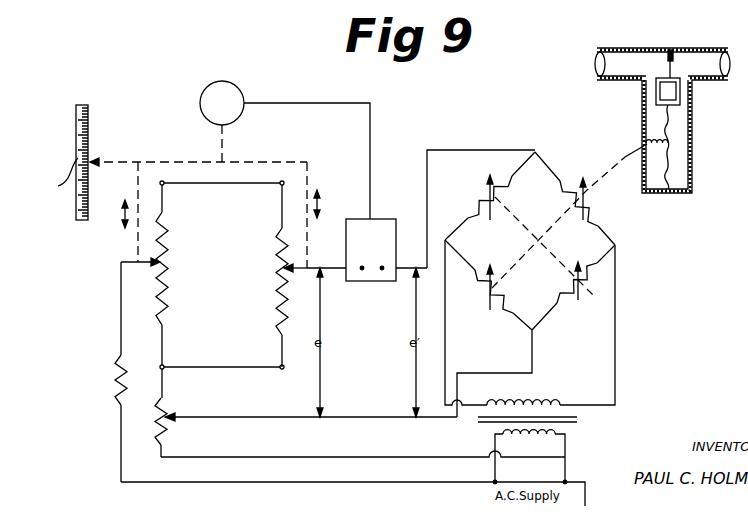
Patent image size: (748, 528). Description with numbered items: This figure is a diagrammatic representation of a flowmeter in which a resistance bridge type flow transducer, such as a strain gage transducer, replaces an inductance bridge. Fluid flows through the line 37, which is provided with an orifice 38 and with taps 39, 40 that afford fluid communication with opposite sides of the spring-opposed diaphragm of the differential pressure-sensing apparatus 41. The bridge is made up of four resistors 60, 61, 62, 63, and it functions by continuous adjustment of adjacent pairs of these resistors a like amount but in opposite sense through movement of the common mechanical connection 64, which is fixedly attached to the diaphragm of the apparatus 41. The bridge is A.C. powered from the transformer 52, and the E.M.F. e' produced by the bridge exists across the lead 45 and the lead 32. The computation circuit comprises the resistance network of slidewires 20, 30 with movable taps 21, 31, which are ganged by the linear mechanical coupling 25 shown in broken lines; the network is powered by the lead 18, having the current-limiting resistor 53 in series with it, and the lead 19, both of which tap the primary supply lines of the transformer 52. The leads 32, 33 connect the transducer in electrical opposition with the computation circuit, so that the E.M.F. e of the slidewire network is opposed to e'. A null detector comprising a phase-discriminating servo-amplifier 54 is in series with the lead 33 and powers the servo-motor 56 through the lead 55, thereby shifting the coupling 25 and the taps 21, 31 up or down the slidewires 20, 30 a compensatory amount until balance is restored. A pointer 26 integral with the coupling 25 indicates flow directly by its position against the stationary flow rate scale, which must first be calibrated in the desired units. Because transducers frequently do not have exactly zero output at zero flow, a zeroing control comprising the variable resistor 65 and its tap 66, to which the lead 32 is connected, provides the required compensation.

The lead 18 is at (120, 318).
The lead 19 is at (216, 456).
The slidewire 20 is at (168, 283).
The movable tap 21 is at (155, 266).
The mechanical coupling 25 is at (234, 161).
The pointer 26 is at (97, 161).
The slidewire 30 is at (278, 264).
The movable tap 31 is at (291, 272).
The lead 32 is at (256, 417).
The lead 33 is at (338, 266).
The line 37 is at (630, 48).
The orifice 38 is at (675, 53).
The tap 39 is at (697, 92).
The tap 40 is at (650, 93).
The differential pressure-sensing apparatus 41 is at (694, 160).
The lead 45 is at (452, 150).
The transformer 52 is at (580, 420).
The current-limiting resistor 53 is at (117, 380).
The servo-amplifier 54 is at (383, 219).
The lead 55 is at (370, 128).
The servo-motor 56 is at (240, 88).
The resistor 60 is at (496, 199).
The resistor 61 is at (598, 205).
The resistor 62 is at (561, 309).
The resistor 63 is at (497, 289).
The mechanical connection 64 is at (620, 163).
The variable resistor 65 is at (158, 402).
The tap 66 is at (176, 414).